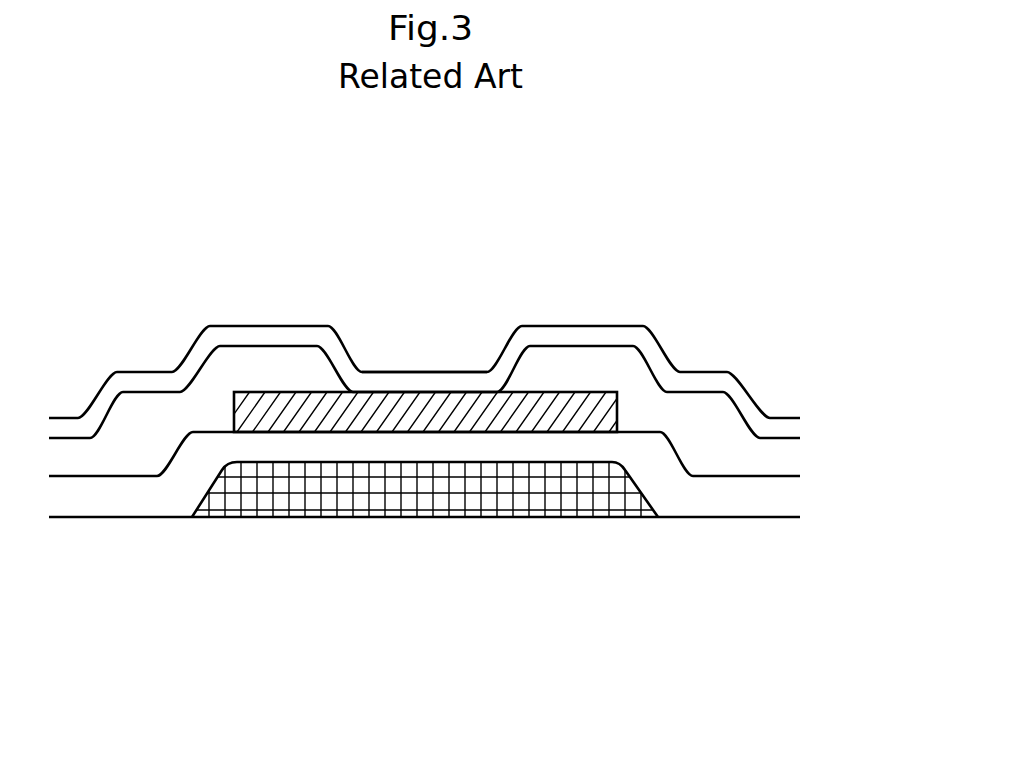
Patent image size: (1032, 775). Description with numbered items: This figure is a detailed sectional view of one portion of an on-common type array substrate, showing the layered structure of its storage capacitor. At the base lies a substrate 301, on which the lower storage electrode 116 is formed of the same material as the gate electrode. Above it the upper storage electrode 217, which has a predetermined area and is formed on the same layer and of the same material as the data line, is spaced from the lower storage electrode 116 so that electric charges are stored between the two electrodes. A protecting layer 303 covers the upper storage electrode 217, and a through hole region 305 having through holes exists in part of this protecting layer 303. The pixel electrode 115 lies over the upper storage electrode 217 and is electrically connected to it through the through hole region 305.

The substrate 301 is at (728, 502).
The lower storage electrode 116 is at (535, 502).
The protecting layer 303 is at (788, 450).
The upper storage electrode 217 is at (593, 398).
The pixel electrode 115 is at (727, 382).
The through hole region 305 is at (401, 362).